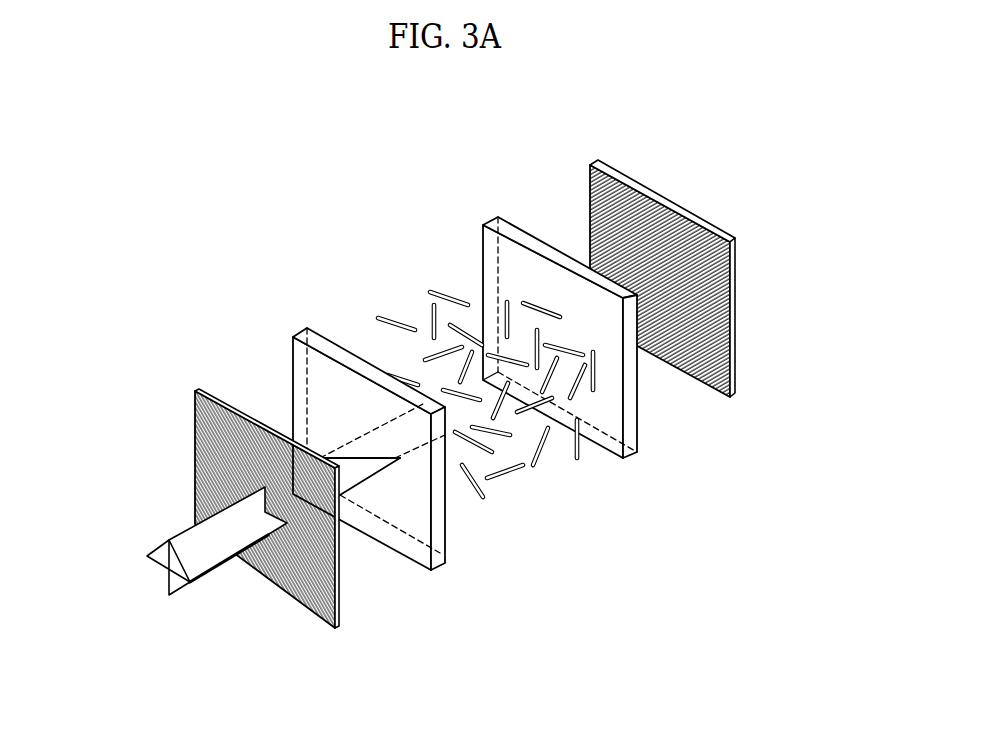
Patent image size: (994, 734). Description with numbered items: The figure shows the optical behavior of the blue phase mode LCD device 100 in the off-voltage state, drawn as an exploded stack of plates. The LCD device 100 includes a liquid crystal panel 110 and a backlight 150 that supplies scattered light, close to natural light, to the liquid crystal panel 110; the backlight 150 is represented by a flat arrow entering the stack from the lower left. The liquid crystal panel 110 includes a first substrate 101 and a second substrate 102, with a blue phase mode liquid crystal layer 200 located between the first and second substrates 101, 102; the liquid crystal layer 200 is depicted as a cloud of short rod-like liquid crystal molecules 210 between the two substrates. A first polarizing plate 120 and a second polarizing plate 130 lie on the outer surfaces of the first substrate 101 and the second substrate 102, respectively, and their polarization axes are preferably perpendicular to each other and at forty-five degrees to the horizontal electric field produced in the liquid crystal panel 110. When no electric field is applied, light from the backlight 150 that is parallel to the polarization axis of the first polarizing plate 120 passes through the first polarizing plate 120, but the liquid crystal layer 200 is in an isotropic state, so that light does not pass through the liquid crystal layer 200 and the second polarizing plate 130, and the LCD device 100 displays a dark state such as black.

The blue phase mode LCD device 100 is at (699, 149).
The liquid crystal panel 110 is at (530, 573).
The first substrate 101 is at (447, 548).
The second substrate 102 is at (640, 431).
The first polarizing plate 120 is at (340, 605).
The second polarizing plate 130 is at (738, 367).
The backlight 150 is at (172, 562).
The blue phase mode liquid crystal layer 200 is at (568, 473).
The liquid crystal molecules 210 is at (510, 435).